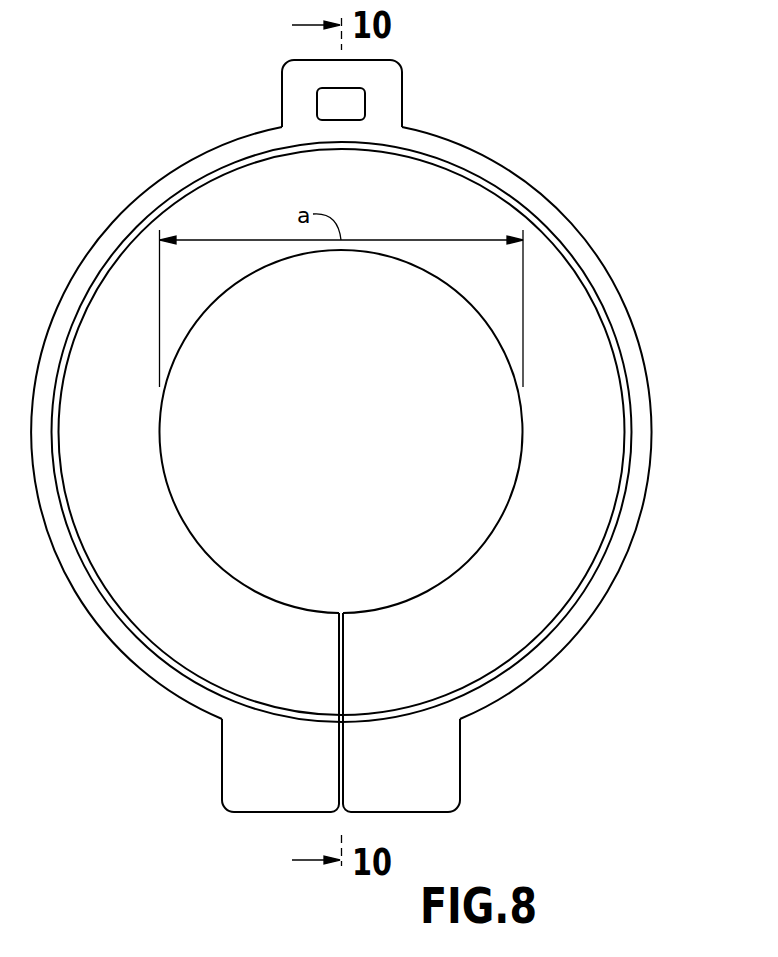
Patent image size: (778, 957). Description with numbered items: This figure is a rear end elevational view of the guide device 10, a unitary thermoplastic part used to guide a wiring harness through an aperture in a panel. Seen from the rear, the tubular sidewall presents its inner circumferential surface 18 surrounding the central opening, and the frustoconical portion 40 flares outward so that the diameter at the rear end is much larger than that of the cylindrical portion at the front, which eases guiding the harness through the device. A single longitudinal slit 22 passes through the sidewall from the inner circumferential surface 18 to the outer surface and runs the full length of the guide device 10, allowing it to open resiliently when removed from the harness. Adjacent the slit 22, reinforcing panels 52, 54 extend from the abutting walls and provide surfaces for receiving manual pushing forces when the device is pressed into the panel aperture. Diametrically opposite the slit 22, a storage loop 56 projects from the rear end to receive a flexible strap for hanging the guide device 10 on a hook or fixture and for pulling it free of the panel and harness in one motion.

The guide device 10 is at (630, 222).
The inner circumferential surface 18 is at (133, 444).
The longitudinal slit 22 is at (338, 660).
The frustoconical portion 40 is at (585, 378).
The reinforcing panel 52 is at (283, 779).
The reinforcing panel 54 is at (403, 774).
The storage loop 56 is at (403, 93).